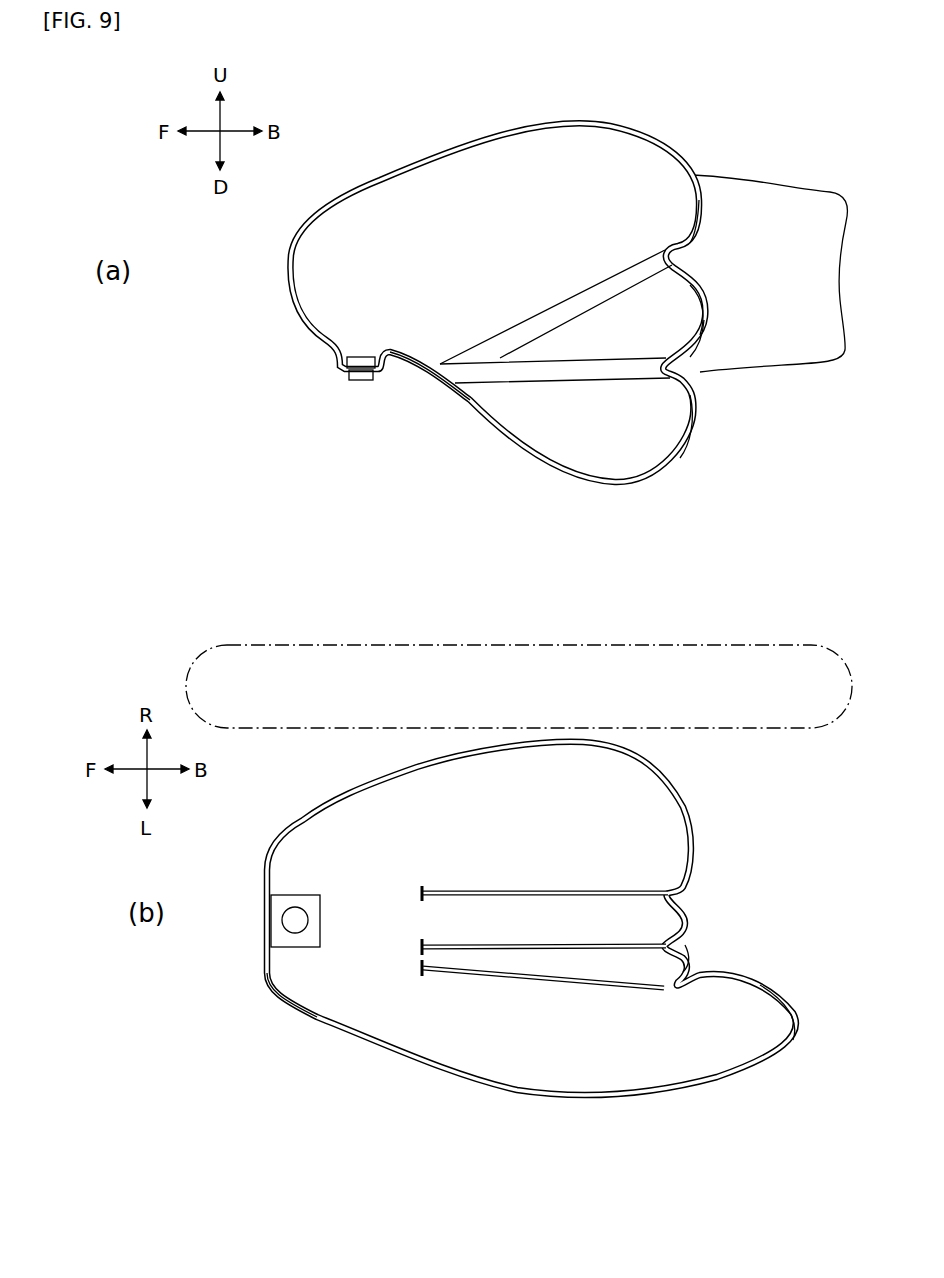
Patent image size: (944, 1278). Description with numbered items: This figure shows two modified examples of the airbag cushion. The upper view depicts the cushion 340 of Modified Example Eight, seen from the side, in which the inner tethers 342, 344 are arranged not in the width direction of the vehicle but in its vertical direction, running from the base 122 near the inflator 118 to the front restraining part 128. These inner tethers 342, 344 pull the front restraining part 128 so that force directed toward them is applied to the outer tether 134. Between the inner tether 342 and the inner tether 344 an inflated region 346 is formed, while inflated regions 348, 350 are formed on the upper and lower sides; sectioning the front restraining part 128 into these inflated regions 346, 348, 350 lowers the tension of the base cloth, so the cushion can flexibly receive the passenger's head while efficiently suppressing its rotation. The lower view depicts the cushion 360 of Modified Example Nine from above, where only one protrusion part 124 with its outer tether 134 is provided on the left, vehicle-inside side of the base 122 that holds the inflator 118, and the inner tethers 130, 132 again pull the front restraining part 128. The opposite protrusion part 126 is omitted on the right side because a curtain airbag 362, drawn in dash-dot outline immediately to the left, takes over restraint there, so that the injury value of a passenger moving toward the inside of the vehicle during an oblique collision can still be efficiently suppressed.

The inflator 118 is at (355, 385).
The base 122 is at (460, 395).
The protrusion part 124 is at (780, 1025).
The protrusion part 126 is at (786, 184).
The front restraining part 128 is at (706, 302).
The inner tether 130 is at (492, 952).
The inner tether 132 is at (490, 890).
The outer tether 134 is at (540, 985).
The cushion of Modified Example 8 340 is at (404, 152).
The inner tether 342 is at (540, 325).
The inner tether 344 is at (576, 368).
The inflated region 346 is at (705, 325).
The inflated region 348 is at (706, 211).
The inflated region 350 is at (694, 436).
The cushion of Modified Example 9 360 is at (360, 785).
The curtain airbag 362 is at (558, 644).